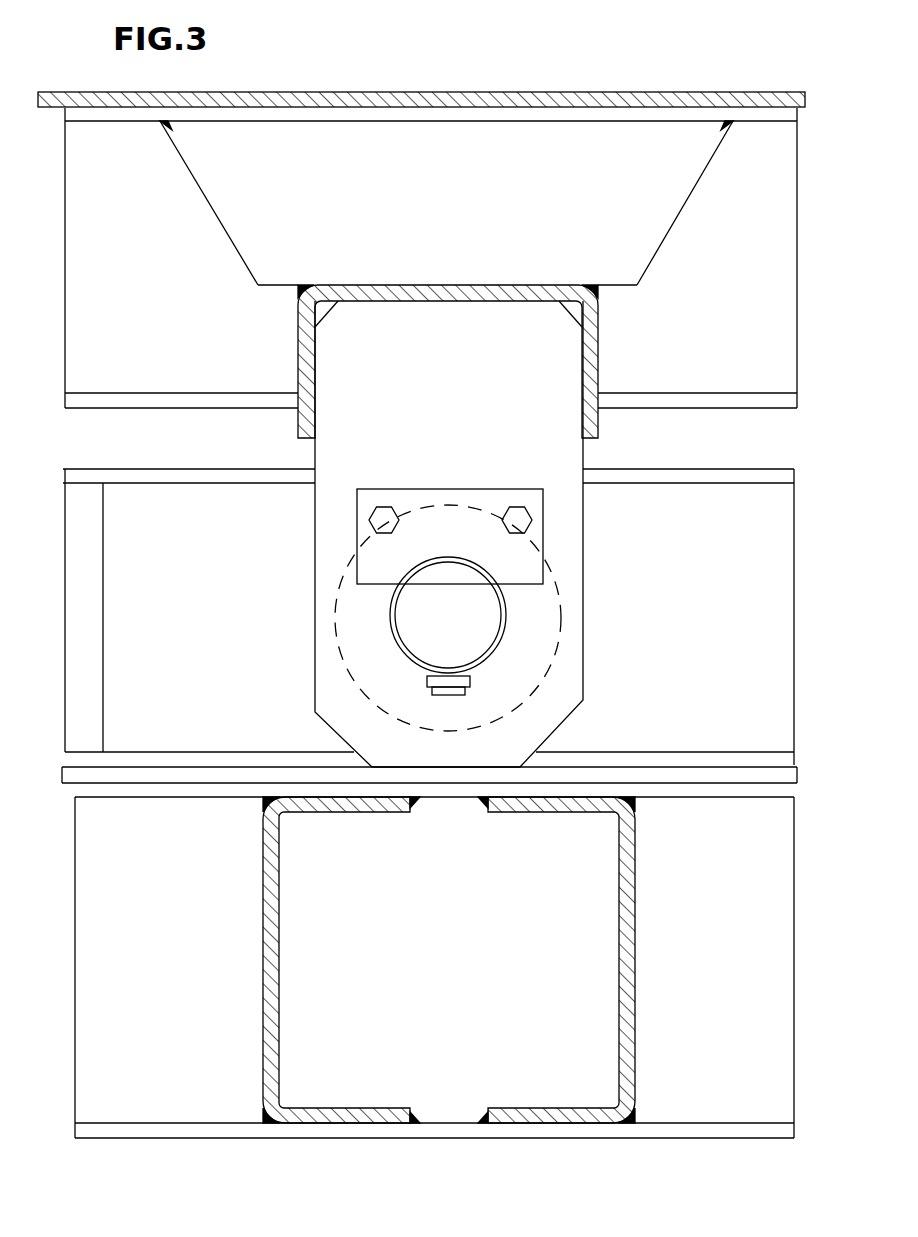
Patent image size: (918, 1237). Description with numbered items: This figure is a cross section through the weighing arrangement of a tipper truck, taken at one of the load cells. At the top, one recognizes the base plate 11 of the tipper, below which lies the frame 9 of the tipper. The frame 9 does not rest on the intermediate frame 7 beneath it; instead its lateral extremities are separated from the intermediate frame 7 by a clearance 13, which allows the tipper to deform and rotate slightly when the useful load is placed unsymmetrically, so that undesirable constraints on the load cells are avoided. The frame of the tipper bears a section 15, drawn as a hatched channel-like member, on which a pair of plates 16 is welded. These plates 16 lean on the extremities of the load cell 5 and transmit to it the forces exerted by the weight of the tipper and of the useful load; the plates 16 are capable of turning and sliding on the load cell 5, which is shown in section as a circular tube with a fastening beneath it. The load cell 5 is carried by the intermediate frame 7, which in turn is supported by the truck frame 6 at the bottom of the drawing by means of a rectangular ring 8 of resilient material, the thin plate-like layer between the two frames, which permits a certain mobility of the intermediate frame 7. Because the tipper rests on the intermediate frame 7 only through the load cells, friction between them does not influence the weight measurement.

The base plate 11 is at (531, 60).
The frame of the tipper 9 is at (135, 378).
The clearance 13 is at (238, 454).
The section 15 is at (591, 350).
The intermediate frame 7 is at (748, 492).
The plates 16 is at (338, 683).
The load cell 5 is at (482, 622).
The rectangular ring 8 is at (208, 773).
The truck frame 6 is at (645, 1107).